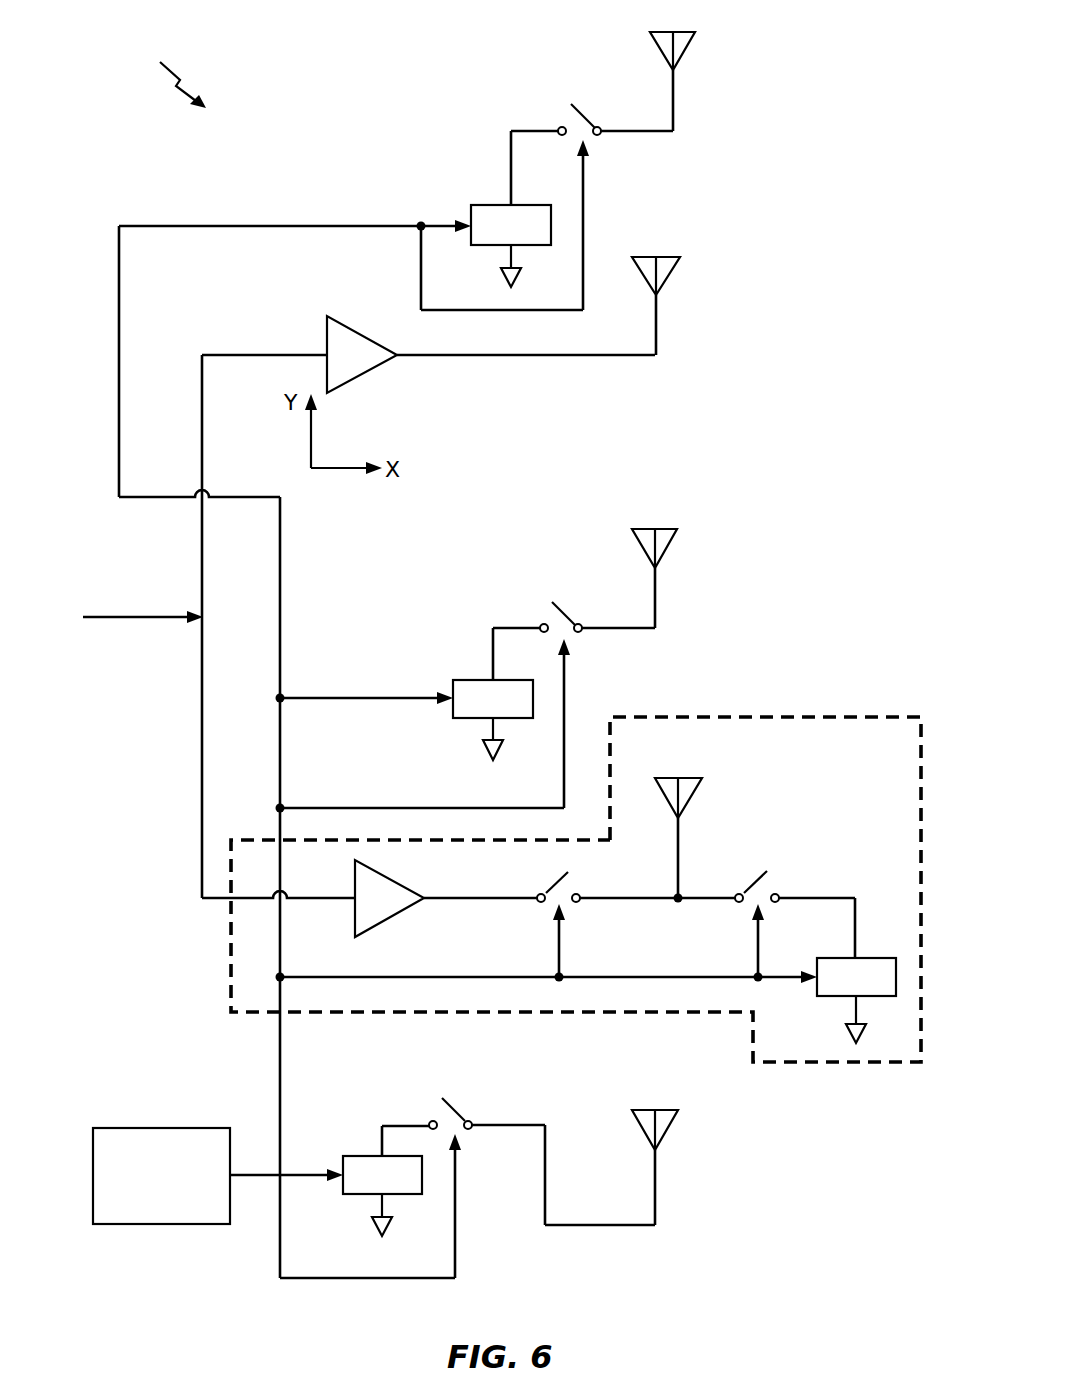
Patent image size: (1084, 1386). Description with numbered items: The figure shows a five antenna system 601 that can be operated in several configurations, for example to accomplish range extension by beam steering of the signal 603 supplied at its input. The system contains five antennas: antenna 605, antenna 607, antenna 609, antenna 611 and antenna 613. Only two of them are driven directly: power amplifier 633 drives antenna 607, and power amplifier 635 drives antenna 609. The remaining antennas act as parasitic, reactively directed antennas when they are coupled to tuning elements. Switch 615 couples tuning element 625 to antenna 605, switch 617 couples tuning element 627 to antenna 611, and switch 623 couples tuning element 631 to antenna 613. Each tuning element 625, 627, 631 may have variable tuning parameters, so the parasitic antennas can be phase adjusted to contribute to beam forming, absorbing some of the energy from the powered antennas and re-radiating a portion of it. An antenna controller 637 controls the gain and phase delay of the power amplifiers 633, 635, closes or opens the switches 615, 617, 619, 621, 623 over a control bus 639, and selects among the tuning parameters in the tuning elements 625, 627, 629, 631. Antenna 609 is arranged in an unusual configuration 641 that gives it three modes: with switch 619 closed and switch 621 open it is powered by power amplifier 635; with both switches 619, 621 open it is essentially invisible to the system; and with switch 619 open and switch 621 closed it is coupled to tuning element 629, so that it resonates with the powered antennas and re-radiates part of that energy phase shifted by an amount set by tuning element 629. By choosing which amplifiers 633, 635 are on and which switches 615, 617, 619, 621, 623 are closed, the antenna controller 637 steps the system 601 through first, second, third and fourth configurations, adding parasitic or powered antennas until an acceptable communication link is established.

The five antenna system 601 is at (162, 74).
The signal 603 is at (147, 614).
The antenna 605 is at (659, 32).
The antenna 607 is at (643, 257).
The antenna 609 is at (665, 778).
The antenna 611 is at (643, 529).
The antenna 613 is at (643, 1110).
The switch 615 is at (580, 114).
The switch 617 is at (565, 612).
The switch 619 is at (553, 884).
The switch 621 is at (753, 882).
The switch 623 is at (453, 1108).
The tuning element 625 is at (488, 205).
The tuning element 627 is at (469, 680).
The tuning element 629 is at (843, 958).
The tuning element 631 is at (359, 1156).
The power amplifier 633 is at (362, 377).
The power amplifier 635 is at (388, 918).
The antenna controller 637 is at (157, 1224).
The control bus 639 is at (280, 1084).
The unusual configuration 641 is at (470, 1013).